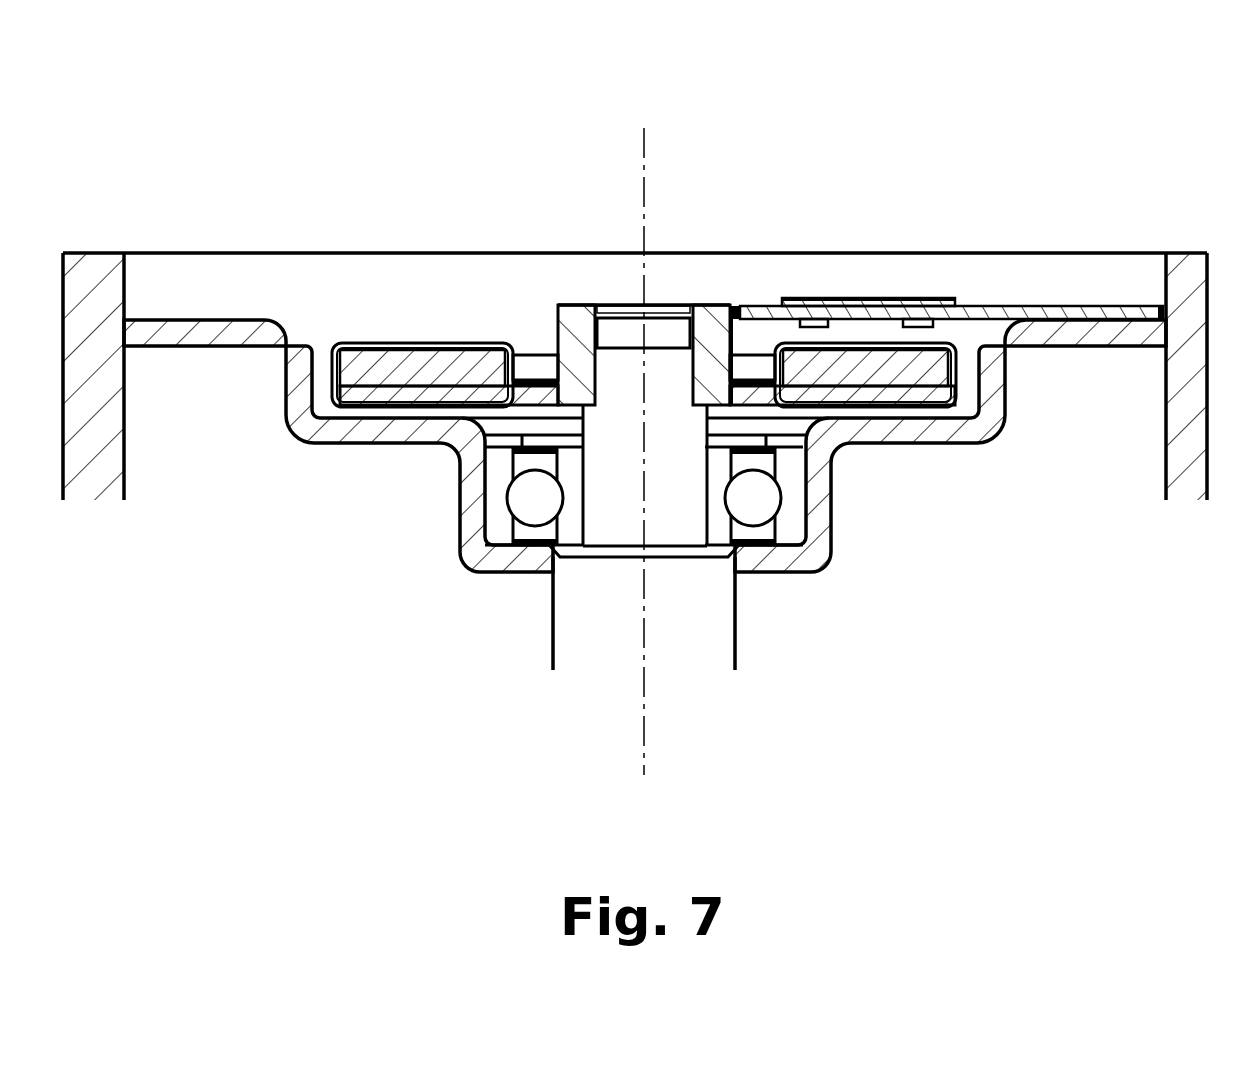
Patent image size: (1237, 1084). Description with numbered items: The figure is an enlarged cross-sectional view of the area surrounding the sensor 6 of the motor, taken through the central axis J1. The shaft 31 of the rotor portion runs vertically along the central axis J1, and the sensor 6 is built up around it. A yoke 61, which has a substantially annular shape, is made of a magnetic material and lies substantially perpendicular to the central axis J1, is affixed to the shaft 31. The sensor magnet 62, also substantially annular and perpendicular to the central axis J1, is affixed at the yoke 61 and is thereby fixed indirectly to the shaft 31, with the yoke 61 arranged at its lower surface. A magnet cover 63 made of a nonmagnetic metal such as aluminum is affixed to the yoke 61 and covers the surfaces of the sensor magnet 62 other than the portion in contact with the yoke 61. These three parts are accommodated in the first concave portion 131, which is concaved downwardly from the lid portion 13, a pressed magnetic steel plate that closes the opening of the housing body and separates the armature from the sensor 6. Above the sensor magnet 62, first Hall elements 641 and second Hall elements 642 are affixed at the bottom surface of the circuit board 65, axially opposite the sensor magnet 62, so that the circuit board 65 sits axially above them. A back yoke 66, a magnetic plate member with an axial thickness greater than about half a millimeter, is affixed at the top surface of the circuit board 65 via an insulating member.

The sensor 6 is at (740, 361).
The lid portion 13 is at (635, 363).
The first concave portion 131 is at (323, 333).
The shaft 31 is at (597, 488).
The yoke 61 is at (492, 397).
The sensor magnet 62 is at (445, 370).
The magnet cover 63 is at (378, 347).
The circuit board 65 is at (994, 314).
The back yoke 66 is at (843, 300).
The first Hall elements 641 is at (815, 330).
The second Hall elements 642 is at (918, 330).
The central axis J1 is at (646, 163).